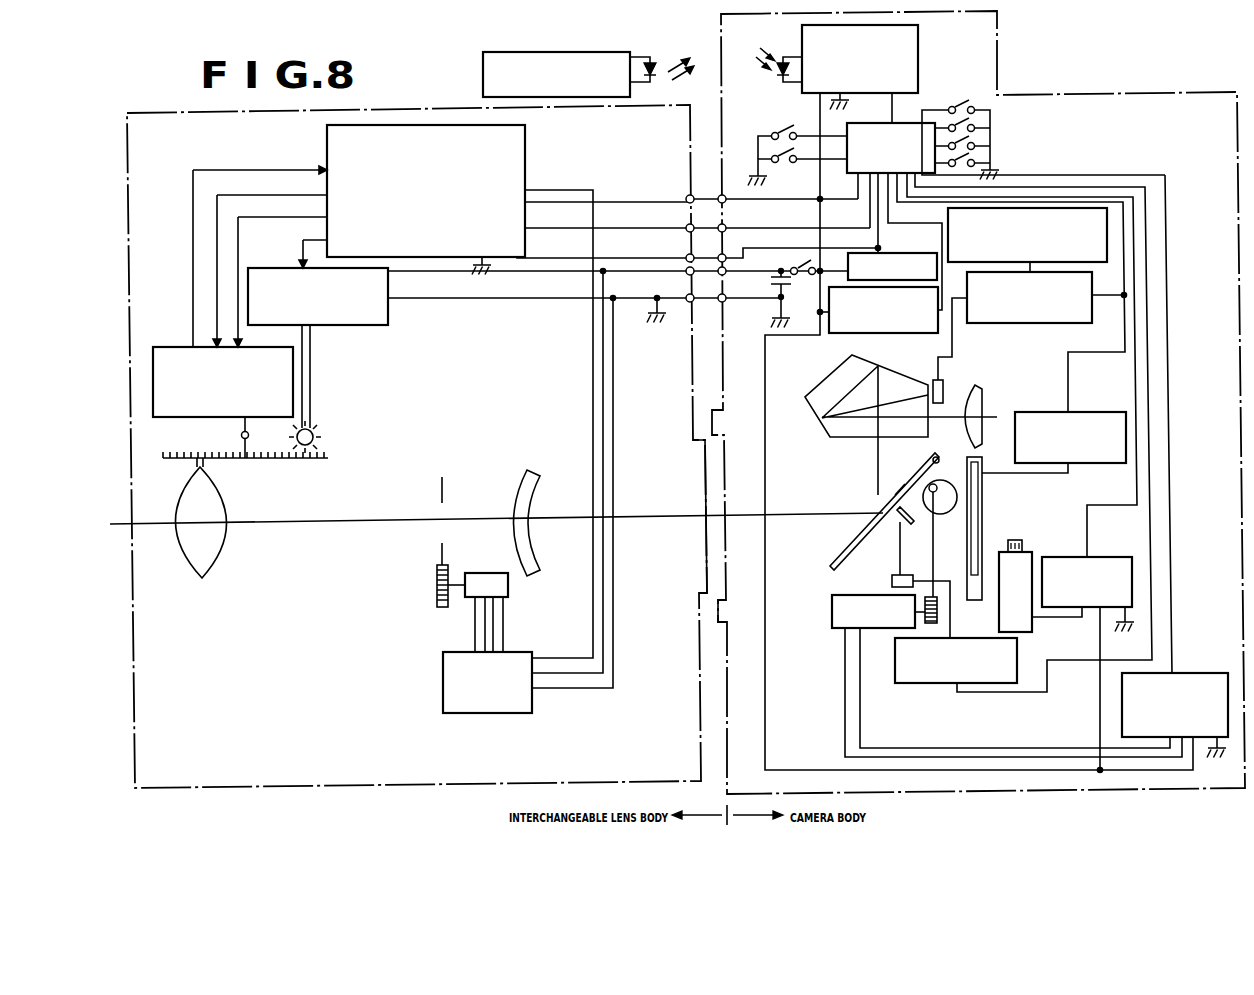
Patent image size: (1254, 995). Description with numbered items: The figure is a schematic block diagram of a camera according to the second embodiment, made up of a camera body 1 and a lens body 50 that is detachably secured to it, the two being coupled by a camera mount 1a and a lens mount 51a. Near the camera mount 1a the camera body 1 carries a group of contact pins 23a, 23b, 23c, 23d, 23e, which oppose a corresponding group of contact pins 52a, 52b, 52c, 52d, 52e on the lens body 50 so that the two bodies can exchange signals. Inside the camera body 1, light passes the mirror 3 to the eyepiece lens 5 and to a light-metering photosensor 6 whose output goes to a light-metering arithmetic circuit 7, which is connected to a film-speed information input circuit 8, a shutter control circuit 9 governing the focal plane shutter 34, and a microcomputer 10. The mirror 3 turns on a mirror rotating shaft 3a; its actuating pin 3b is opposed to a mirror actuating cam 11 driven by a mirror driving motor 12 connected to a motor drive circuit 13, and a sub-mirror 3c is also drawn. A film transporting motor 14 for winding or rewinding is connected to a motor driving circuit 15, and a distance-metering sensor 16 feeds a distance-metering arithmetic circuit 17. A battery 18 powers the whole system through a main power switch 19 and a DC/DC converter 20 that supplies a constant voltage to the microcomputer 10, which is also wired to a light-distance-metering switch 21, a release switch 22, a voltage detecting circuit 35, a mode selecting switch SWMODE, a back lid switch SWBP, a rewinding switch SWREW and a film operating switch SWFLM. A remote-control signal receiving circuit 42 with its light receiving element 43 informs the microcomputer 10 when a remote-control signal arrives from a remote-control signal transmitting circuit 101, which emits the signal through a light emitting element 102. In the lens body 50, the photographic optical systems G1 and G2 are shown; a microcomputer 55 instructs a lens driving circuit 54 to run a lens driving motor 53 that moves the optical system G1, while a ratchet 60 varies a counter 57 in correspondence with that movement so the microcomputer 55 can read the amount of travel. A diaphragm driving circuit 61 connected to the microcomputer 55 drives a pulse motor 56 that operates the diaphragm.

The camera body 1 is at (1137, 92).
The camera mount 1a is at (728, 612).
The mirror 3 is at (840, 556).
The mirror rotating shaft 3a is at (933, 458).
The actuating pin 3b is at (910, 484).
The sub-mirror 3c is at (906, 526).
The eyepiece lens 5 is at (984, 400).
The light-metering photosensor 6 is at (944, 386).
The light-metering arithmetic circuit 7 is at (1038, 323).
The film-speed information input circuit 8 is at (1100, 262).
The shutter control circuit 9 is at (1108, 412).
The microcomputer 10 is at (872, 123).
The mirror actuating cam 11 is at (946, 512).
The mirror driving motor 12 is at (832, 620).
The motor drive circuit 13 is at (1205, 673).
The film transporting motor 14 is at (1030, 550).
The motor driving circuit 15 is at (1120, 557).
The distance-metering sensor 16 is at (892, 580).
The distance-metering arithmetic circuit 17 is at (912, 683).
The battery 18 is at (786, 284).
The main power switch 19 is at (800, 262).
The DC/DC converter 20 is at (908, 253).
The light-distance-metering switch 21 is at (776, 131).
The release switch 22 is at (787, 165).
The contact pin 23a is at (726, 201).
The contact pin 23b is at (726, 230).
The contact pin 23c is at (726, 259).
The contact pin 23d is at (726, 273).
The contact pin 23e is at (726, 300).
The focal plane shutter 34 is at (983, 459).
The voltage detecting circuit 35 is at (912, 333).
The remote-control signal receiving circuit 42 is at (918, 40).
The light receiving element 43 is at (783, 55).
The lens body 50 is at (216, 788).
The lens mount 51a is at (695, 590).
The contact pin 52a is at (686, 198).
The contact pin 52b is at (686, 227).
The contact pin 52c is at (686, 256).
The contact pin 52d is at (686, 273).
The contact pin 52e is at (688, 302).
The lens driving motor 53 is at (316, 434).
The lens driving circuit 54 is at (372, 325).
The microcomputer 55 is at (327, 148).
The pulse motor 56 is at (508, 590).
The counter 57 is at (167, 347).
The ratchet 60 is at (241, 435).
The diaphragm driving circuit 61 is at (443, 703).
The photographic optical system G1 is at (208, 572).
The photographic optical system G2 is at (541, 566).
The remote-control signal transmitting circuit 101 is at (483, 65).
The light emitting element 102 is at (652, 57).
The mode selecting switch SWMODE is at (960, 104).
The back lid switch SWBP is at (990, 127).
The rewinding switch SWREW is at (990, 146).
The film operating switch SWFLM is at (990, 163).